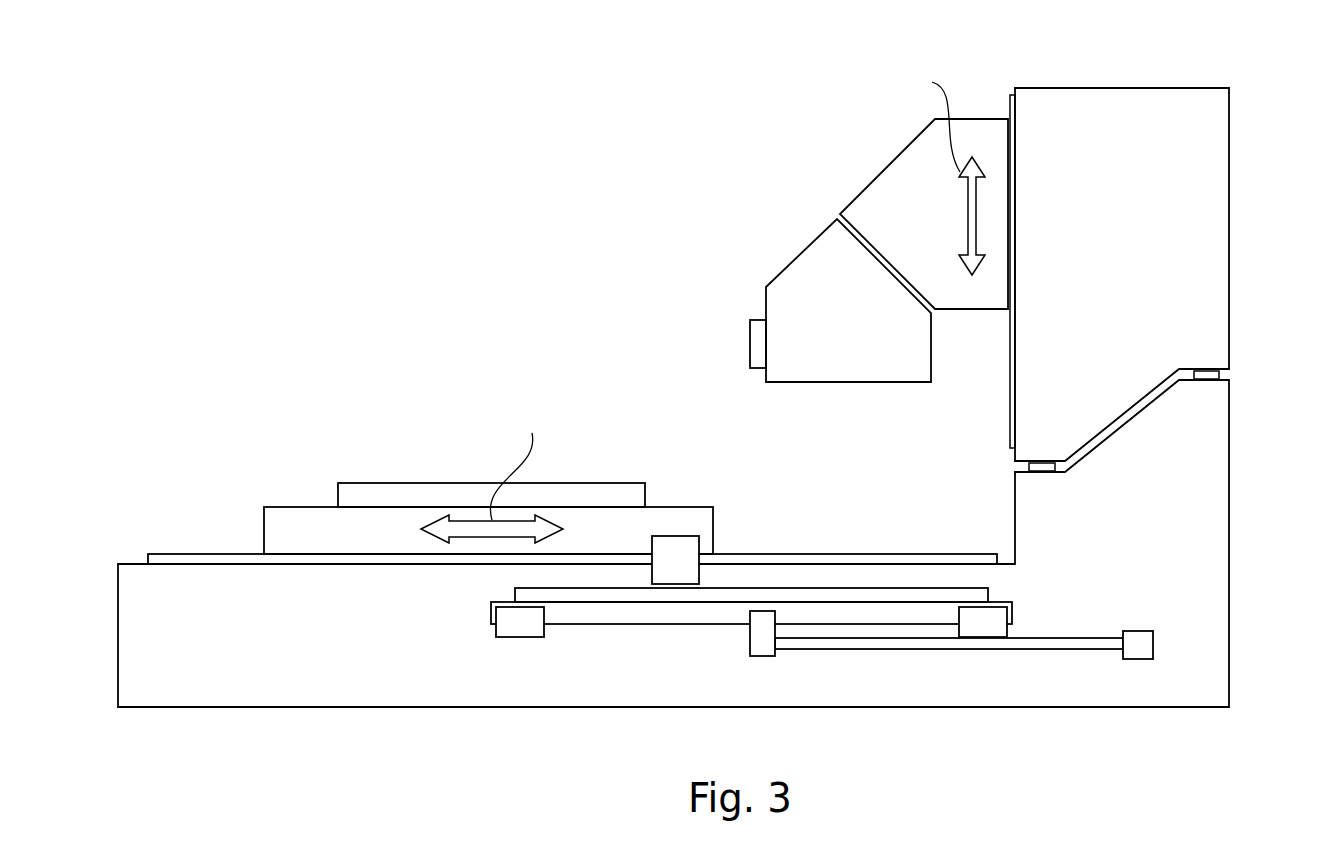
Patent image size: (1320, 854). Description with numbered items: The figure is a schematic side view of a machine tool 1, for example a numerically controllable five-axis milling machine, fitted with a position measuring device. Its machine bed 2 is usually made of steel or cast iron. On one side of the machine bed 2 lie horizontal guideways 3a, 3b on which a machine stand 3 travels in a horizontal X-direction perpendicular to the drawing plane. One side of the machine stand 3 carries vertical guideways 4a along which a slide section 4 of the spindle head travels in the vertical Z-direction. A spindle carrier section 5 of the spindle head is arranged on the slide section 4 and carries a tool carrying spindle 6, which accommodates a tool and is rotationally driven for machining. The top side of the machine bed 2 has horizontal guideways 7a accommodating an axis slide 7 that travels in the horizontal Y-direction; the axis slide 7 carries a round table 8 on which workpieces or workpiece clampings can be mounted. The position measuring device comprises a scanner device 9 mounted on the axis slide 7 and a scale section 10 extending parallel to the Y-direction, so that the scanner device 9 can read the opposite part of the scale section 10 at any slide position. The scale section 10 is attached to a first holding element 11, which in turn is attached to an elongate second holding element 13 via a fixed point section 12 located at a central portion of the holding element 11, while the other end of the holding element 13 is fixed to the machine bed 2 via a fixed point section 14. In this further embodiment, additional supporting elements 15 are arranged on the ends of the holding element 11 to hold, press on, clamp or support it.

The machine tool 1 is at (654, 156).
The machine bed 2 is at (727, 577).
The machine stand 3 is at (1134, 103).
The horizontal guideway 3a is at (1205, 375).
The horizontal guideway 3b is at (1020, 466).
The slide section of the spindle head 4 is at (898, 170).
The vertical guideways 4a is at (1011, 97).
The spindle carrier section 5 is at (810, 263).
The tool carrying spindle 6 is at (750, 343).
The axis slide 7 is at (282, 515).
The horizontal guideways 7a is at (183, 560).
The round table 8 is at (354, 495).
The scanner device 9 is at (677, 557).
The scale section 10 is at (765, 593).
The first holding element 11 is at (857, 613).
The fixed point section 12 is at (780, 623).
The second holding element 13 is at (1067, 647).
The fixed point section 14 is at (1138, 647).
The supporting elements 15 is at (993, 620).